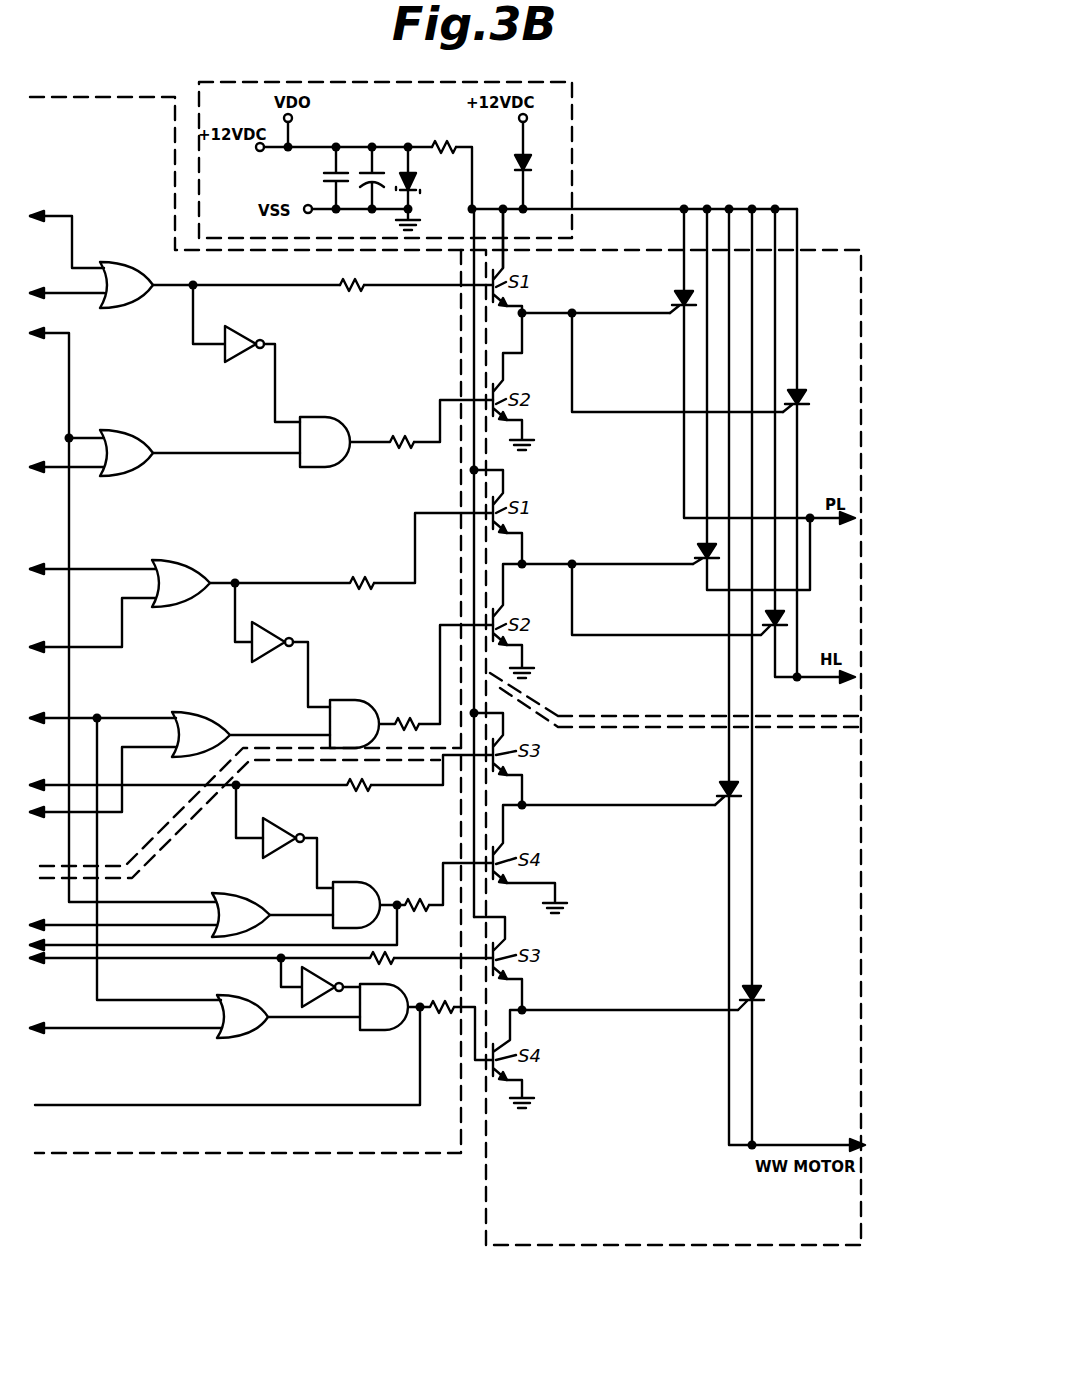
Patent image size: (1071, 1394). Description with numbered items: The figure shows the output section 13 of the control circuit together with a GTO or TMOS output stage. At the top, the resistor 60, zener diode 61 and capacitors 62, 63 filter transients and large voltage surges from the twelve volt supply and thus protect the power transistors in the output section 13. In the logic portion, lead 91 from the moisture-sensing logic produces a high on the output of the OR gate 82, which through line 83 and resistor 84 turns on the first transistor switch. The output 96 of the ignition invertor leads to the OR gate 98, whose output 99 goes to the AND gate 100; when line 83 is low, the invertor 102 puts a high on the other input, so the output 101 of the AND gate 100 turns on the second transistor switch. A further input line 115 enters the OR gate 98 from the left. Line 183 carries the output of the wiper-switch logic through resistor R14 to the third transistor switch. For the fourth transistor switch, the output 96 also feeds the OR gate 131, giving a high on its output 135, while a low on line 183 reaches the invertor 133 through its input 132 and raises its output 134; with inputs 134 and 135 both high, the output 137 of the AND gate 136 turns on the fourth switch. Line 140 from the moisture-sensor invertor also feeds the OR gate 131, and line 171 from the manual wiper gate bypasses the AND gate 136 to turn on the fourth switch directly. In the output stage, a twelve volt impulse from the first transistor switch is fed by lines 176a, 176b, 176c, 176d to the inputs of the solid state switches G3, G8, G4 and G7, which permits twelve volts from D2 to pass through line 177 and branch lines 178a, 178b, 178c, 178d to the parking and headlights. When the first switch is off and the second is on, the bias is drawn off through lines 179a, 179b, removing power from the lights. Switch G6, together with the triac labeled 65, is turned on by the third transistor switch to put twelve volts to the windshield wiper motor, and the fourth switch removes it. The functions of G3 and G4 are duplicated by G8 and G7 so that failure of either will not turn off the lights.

The output section 13 is at (142, 1172).
The resistor 60 is at (440, 145).
The zener diode 61 is at (412, 179).
The capacitor 62 is at (316, 175).
The capacitor 63 is at (358, 165).
The triac 65 is at (722, 785).
The OR gate 82 is at (126, 270).
The line 83 is at (252, 294).
The resistor 84 is at (354, 294).
The lead 91 is at (60, 294).
The output 96 is at (70, 360).
The OR gate 98 is at (124, 422).
The output 99 is at (198, 452).
The AND gate 100 is at (326, 404).
The output 101 is at (388, 436).
The invertor 102 is at (220, 352).
The input line 115 is at (110, 478).
The OR gate 131 is at (234, 899).
The input 132 is at (236, 828).
The invertor 133 is at (290, 822).
The output 134 is at (318, 840).
The output 135 is at (302, 892).
The AND gate 136 is at (368, 868).
The output 137 is at (400, 898).
The line 140 is at (166, 916).
The line 171 is at (300, 950).
The line 176a is at (582, 316).
The line 176b is at (634, 412).
The line 176c is at (610, 568).
The line 176d is at (646, 634).
The line 177 is at (608, 209).
The branch line 178a is at (684, 230).
The branch line 178b is at (707, 262).
The branch line 178c is at (762, 206).
The branch line 178d is at (822, 200).
The line 179a is at (503, 368).
The line 179b is at (503, 598).
The line 183 is at (300, 780).
The diode D2 is at (530, 160).
The resistor R14 is at (364, 792).
The solid state switch G3 is at (676, 295).
The solid state switch G4 is at (700, 550).
The solid state switch G6 is at (759, 1000).
The solid state switch G7 is at (783, 617).
The solid state switch G8 is at (807, 384).